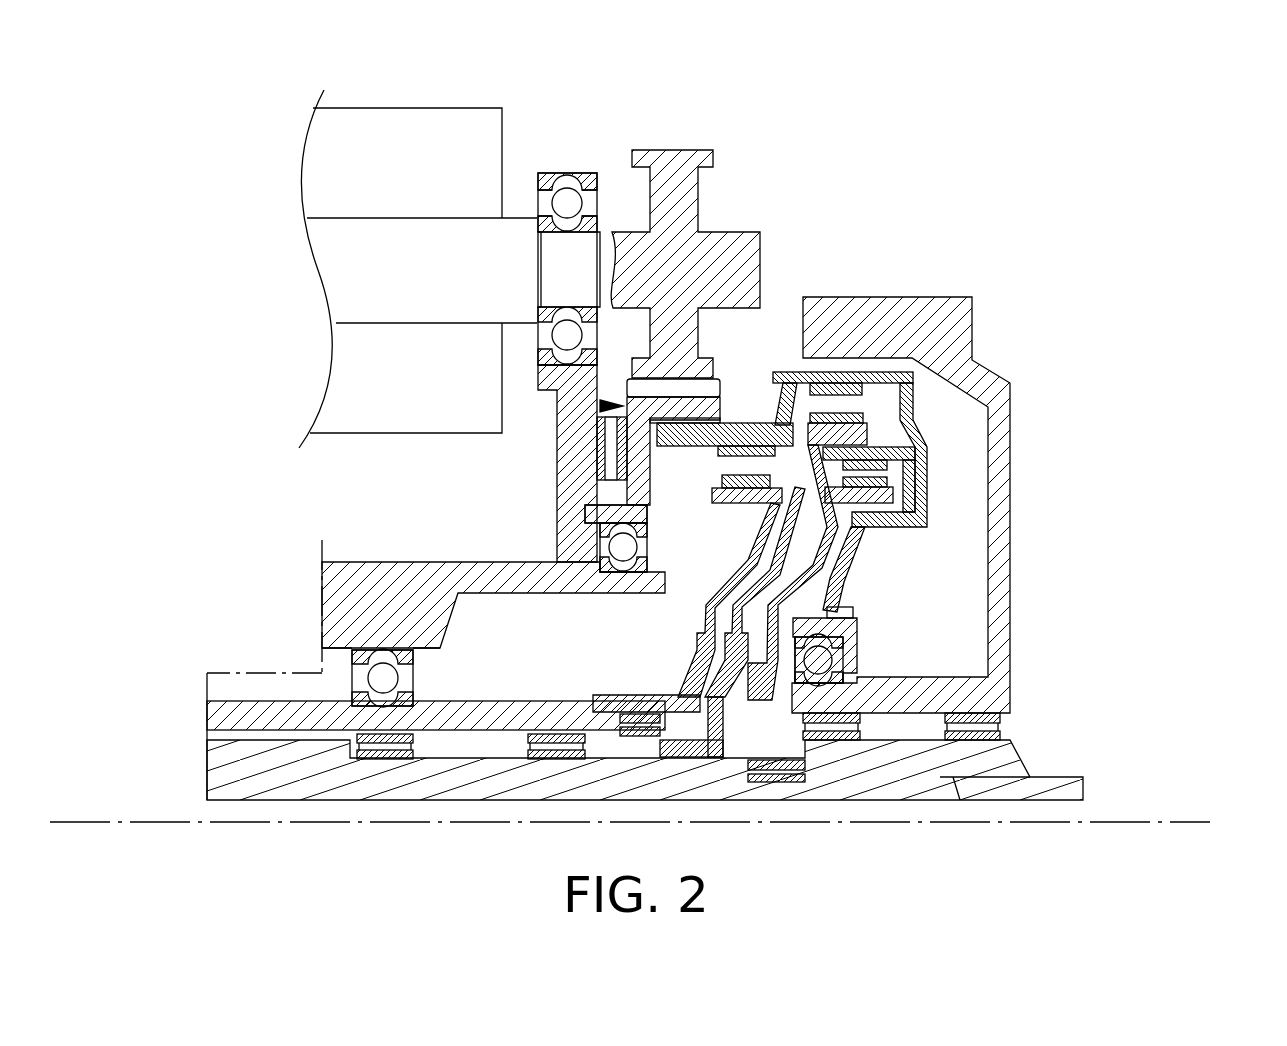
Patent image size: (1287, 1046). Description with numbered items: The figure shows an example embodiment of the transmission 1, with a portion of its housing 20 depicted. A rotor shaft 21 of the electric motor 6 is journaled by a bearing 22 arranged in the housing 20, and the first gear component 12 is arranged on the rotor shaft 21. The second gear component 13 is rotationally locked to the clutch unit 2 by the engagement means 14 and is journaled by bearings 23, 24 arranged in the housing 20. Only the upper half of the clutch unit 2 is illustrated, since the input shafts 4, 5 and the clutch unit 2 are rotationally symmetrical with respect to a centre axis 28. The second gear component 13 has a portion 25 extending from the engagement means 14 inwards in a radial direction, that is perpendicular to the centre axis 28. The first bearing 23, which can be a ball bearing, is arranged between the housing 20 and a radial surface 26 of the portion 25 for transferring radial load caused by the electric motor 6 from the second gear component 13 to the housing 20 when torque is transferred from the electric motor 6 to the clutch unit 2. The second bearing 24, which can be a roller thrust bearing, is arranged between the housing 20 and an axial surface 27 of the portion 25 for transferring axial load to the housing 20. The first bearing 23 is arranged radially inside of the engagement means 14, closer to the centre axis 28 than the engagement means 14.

The transmission 1 is at (1003, 105).
The clutch unit 2 is at (1045, 302).
The input shaft 4 is at (490, 780).
The input shaft 5 is at (522, 726).
The electric motor 6 is at (400, 93).
The first gear component 12 is at (673, 205).
The second gear component 13 is at (723, 423).
The engagement means 14 is at (726, 427).
The housing 20 is at (598, 435).
The rotor shaft 21 is at (517, 218).
The bearing 22 is at (568, 173).
The first bearing 23 is at (623, 552).
The second bearing 24 is at (617, 462).
The portion 25 is at (612, 490).
The radial surface 26 is at (633, 550).
The axial surface 27 is at (590, 406).
The centre axis 28 is at (1203, 822).